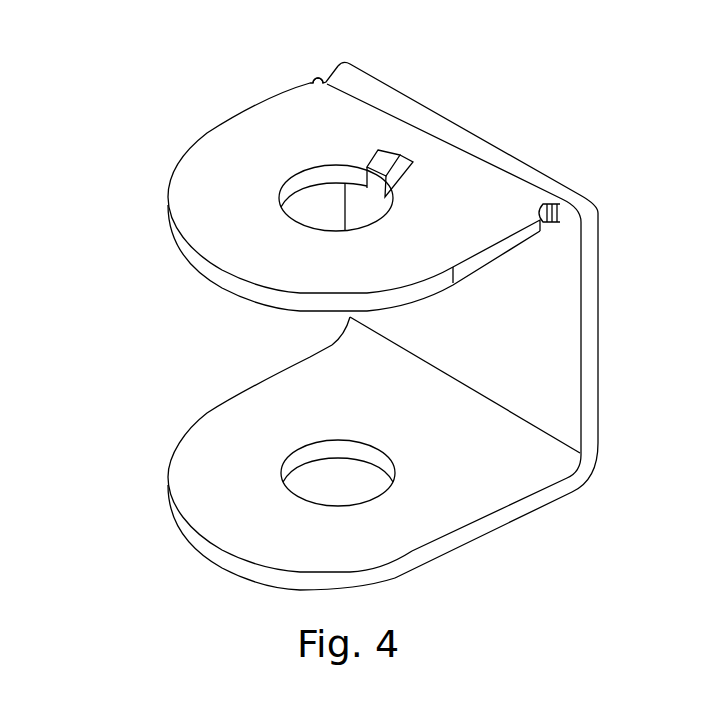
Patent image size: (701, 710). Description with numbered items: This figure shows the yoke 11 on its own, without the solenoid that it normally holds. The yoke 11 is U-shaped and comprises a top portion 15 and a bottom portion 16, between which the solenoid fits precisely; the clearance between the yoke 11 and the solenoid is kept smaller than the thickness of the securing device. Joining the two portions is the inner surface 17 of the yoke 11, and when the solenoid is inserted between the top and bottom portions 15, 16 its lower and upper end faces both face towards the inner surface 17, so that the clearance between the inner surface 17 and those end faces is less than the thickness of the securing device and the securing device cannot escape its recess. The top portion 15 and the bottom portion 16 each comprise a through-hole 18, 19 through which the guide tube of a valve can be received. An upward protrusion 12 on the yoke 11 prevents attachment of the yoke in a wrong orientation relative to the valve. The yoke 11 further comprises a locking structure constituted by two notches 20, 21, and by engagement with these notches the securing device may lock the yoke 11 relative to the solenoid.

The yoke 11 is at (105, 119).
The upward protrusion 12 is at (383, 173).
The top portion 15 is at (183, 218).
The bottom portion 16 is at (182, 530).
The inner surface 17 is at (238, 426).
The through-hole 18 is at (333, 198).
The through-hole 19 is at (348, 482).
The notch 20 is at (577, 220).
The notch 21 is at (314, 78).